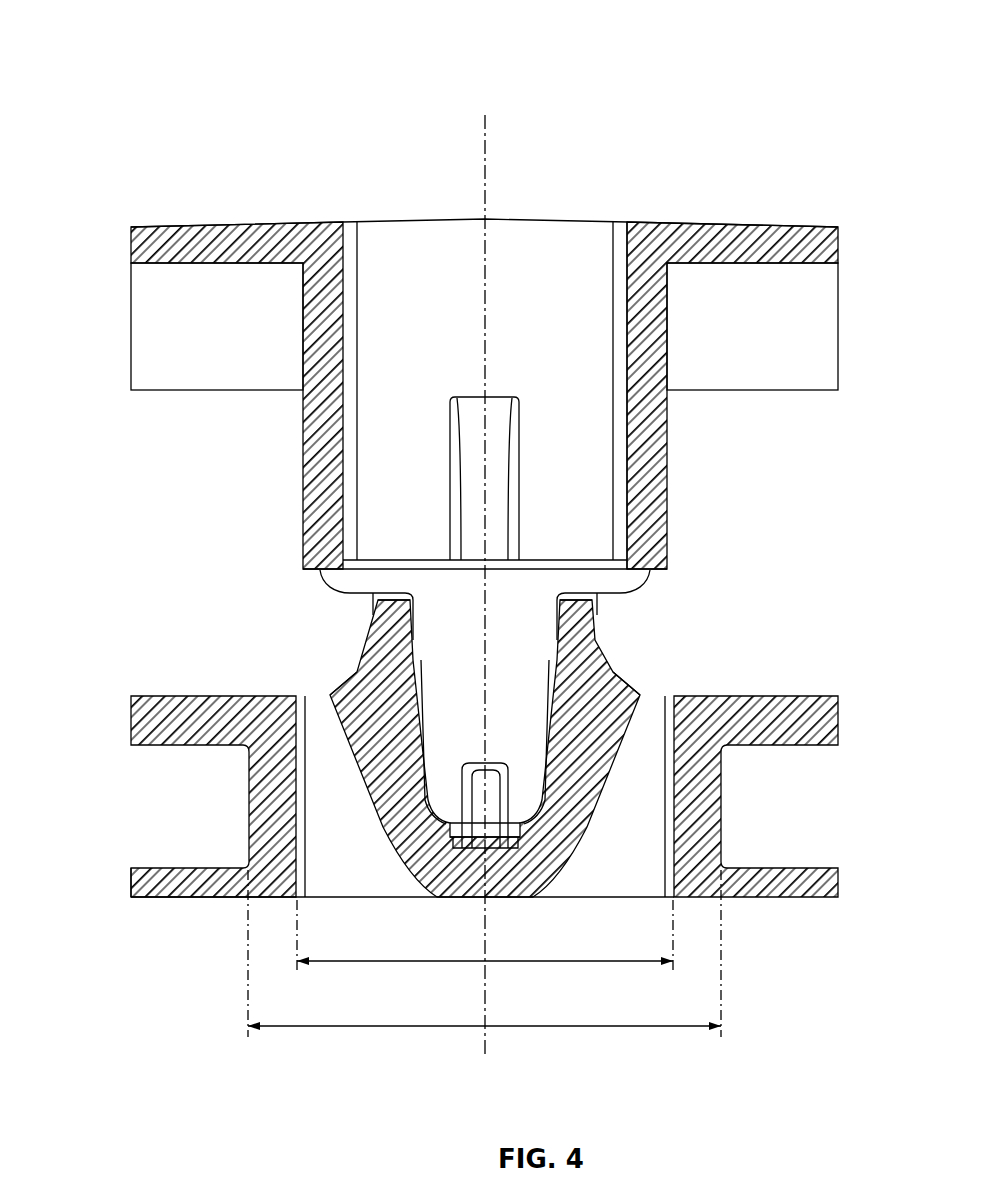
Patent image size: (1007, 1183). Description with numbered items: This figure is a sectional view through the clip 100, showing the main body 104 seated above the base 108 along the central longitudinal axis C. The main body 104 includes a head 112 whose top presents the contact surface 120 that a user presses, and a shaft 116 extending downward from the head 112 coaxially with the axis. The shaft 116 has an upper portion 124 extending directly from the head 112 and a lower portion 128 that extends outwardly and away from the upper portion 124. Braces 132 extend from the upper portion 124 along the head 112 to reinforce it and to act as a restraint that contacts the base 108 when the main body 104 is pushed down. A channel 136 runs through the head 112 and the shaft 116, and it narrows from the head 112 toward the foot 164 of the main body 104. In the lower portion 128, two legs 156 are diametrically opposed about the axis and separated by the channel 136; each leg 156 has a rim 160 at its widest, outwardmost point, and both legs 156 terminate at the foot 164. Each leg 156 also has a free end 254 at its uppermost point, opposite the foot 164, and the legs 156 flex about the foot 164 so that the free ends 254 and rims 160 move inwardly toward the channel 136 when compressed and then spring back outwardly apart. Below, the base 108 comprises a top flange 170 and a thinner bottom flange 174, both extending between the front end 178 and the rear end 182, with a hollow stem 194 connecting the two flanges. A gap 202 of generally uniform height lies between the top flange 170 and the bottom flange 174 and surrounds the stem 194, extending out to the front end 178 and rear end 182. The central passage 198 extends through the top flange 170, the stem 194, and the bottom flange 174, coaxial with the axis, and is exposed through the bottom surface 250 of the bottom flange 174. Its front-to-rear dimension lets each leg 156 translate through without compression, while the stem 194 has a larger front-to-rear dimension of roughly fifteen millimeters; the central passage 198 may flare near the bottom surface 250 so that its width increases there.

The clip 100 is at (128, 42).
The main body 104 is at (156, 236).
The base 108 is at (172, 896).
The head 112 is at (823, 227).
The shaft 116 is at (655, 455).
The contact surface 120 is at (720, 222).
The upper portion 124 is at (648, 518).
The lower portion 128 is at (578, 582).
The braces 132 is at (150, 325).
The channel 136 is at (557, 232).
The legs 156 is at (382, 668).
The rim 160 is at (333, 694).
The foot 164 is at (497, 896).
The top flange 170 is at (146, 720).
The bottom flange 174 is at (236, 896).
The front end 178 is at (838, 885).
The rear end 182 is at (131, 885).
The stem 194 is at (710, 868).
The central passage 198 is at (587, 906).
The gap 202 is at (838, 802).
The bottom surface 250 is at (255, 900).
The free end 254 is at (380, 605).